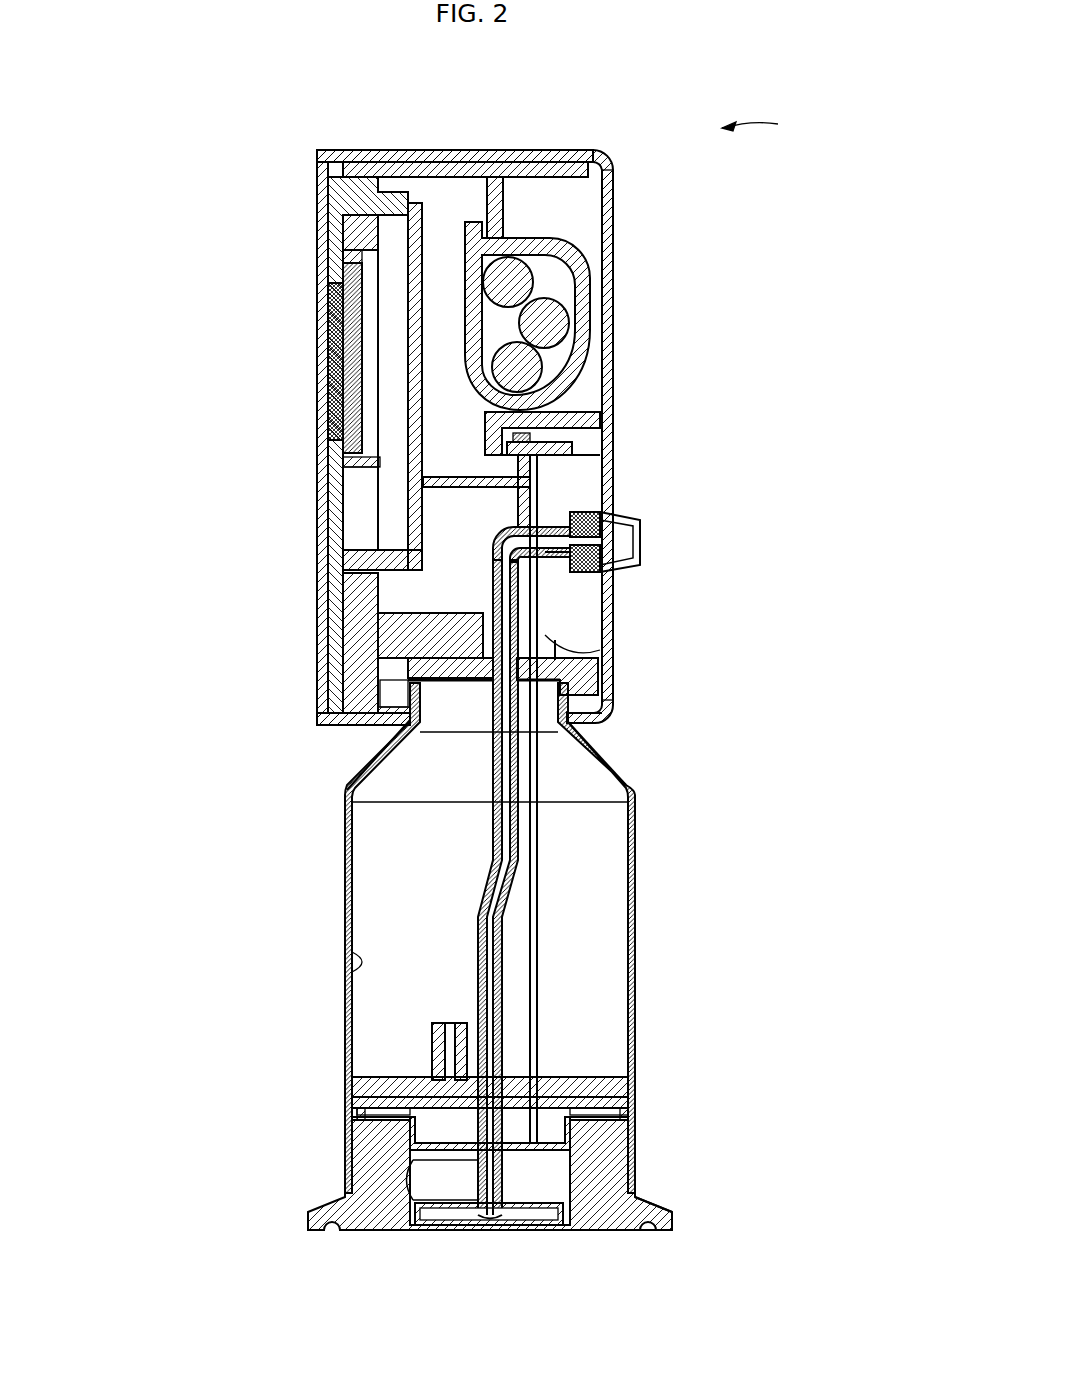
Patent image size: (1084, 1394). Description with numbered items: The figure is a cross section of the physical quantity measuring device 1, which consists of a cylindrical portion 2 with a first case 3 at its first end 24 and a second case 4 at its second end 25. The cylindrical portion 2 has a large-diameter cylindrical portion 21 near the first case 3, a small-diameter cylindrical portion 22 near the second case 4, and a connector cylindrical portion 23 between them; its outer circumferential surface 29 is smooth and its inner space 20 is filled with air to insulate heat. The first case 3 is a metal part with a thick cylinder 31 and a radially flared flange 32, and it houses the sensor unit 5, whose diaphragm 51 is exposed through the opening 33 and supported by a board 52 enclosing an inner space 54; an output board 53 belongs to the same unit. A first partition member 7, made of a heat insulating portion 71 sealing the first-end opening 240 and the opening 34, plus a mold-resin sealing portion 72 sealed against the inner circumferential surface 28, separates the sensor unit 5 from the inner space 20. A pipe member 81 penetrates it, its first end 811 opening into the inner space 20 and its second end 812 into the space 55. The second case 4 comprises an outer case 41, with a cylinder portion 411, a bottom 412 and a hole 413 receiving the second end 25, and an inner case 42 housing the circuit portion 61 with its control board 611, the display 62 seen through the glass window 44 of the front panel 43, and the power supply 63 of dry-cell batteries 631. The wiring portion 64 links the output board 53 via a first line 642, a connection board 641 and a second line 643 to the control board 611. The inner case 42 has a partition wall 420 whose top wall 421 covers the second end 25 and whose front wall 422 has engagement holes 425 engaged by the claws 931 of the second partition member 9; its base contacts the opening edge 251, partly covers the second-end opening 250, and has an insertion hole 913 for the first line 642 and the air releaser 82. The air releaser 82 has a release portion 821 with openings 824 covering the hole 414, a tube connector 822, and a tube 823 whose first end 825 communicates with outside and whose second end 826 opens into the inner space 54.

The physical quantity measuring device 1 is at (760, 119).
The cylindrical portion 2 is at (494, 938).
The first case 3 is at (647, 1174).
The second case 4 is at (612, 154).
The sensor unit 5 is at (446, 1201).
The first partition member 7 is at (544, 1077).
The second partition member 9 is at (590, 656).
The inner space 20 is at (607, 957).
The large-diameter cylindrical portion 21 is at (636, 1000).
The small-diameter cylindrical portion 22 is at (602, 715).
The connector cylindrical portion 23 is at (622, 780).
The first end 24 is at (355, 1100).
The second end 25 is at (380, 700).
The inner circumferential surface 28 is at (352, 965).
The outer circumferential surface 29 is at (635, 930).
The cylinder 31 is at (612, 1190).
The flange 32 is at (660, 1207).
The opening 33 is at (560, 1230).
The opening 34 is at (360, 1112).
The outer case 41 is at (610, 210).
The inner case 42 is at (478, 168).
The front panel 43 is at (330, 203).
The glass window 44 is at (345, 340).
The diaphragm 51 is at (520, 1190).
The board 52 is at (480, 1200).
The output board 53 is at (553, 1170).
The inner space 54 is at (450, 1213).
The space 55 is at (400, 1170).
The circuit portion 61 is at (426, 218).
The display 62 is at (335, 420).
The power supply 63 is at (590, 340).
The wiring portion 64 is at (449, 508).
The heat insulating portion 71 is at (633, 1103).
The sealing portion 72 is at (633, 1085).
The pipe member 81 is at (432, 1048).
The air releaser 82 is at (517, 863).
The first-end opening 240 is at (352, 1160).
The second-end opening 250 is at (585, 672).
The opening edge 251 is at (385, 690).
The cylinder portion 411 is at (526, 157).
The bottom 412 is at (607, 240).
The hole 413 is at (365, 772).
The hole 414 is at (608, 540).
The partition wall 420 is at (335, 593).
The top wall 421 is at (363, 630).
The front wall 422 is at (318, 725).
The engagement holes 425 is at (410, 668).
The control board 611 is at (400, 205).
The dry-cell batteries 631 is at (515, 285).
The connection board 641 is at (496, 428).
The first line 642 is at (518, 500).
The second line 643 is at (507, 448).
The first end 811 is at (440, 1025).
The second end 812 is at (430, 1063).
The release portion 821 is at (640, 520).
The tube connector 822 is at (582, 512).
The tube 823 is at (483, 887).
The openings 824 is at (628, 515).
The first end 825 is at (545, 556).
The second end 826 is at (427, 1187).
The insertion hole 913 is at (560, 645).
The claws 931 is at (400, 665).